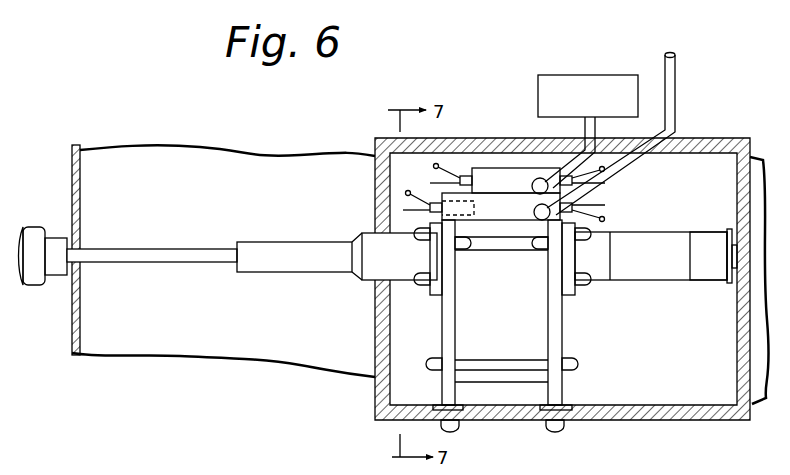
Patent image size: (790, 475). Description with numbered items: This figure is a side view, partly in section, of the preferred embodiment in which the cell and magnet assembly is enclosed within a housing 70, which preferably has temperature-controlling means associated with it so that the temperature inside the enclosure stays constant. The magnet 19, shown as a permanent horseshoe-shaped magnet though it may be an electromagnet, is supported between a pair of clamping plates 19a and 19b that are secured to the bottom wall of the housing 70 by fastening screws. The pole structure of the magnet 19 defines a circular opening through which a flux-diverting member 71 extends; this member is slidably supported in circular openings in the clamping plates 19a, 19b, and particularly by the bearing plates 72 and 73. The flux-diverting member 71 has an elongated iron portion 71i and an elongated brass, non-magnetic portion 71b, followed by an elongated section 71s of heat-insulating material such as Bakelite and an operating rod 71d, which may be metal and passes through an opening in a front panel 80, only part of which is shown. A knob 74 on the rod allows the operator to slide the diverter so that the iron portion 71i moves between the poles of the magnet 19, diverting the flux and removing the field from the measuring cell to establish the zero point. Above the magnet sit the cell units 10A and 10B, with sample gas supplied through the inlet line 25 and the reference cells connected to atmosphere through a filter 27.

The front panel 80 is at (72, 190).
The housing 70 is at (665, 421).
The knob 74 is at (37, 287).
The operating rod 71d is at (173, 250).
The elongated section 71s is at (263, 265).
The brass portion 71b is at (375, 246).
The bearing plate 72 is at (433, 287).
The clamping plate 19a is at (447, 323).
The magnet 19 is at (540, 338).
The clamping plate 19b is at (555, 384).
The bearing plate 73 is at (566, 290).
The flux-diverting member 71 is at (640, 300).
The iron portion 71i is at (690, 243).
The sensor 10B is at (484, 170).
The sensor 10A is at (495, 207).
The filter 27 is at (553, 83).
The inlet line 25 is at (676, 106).